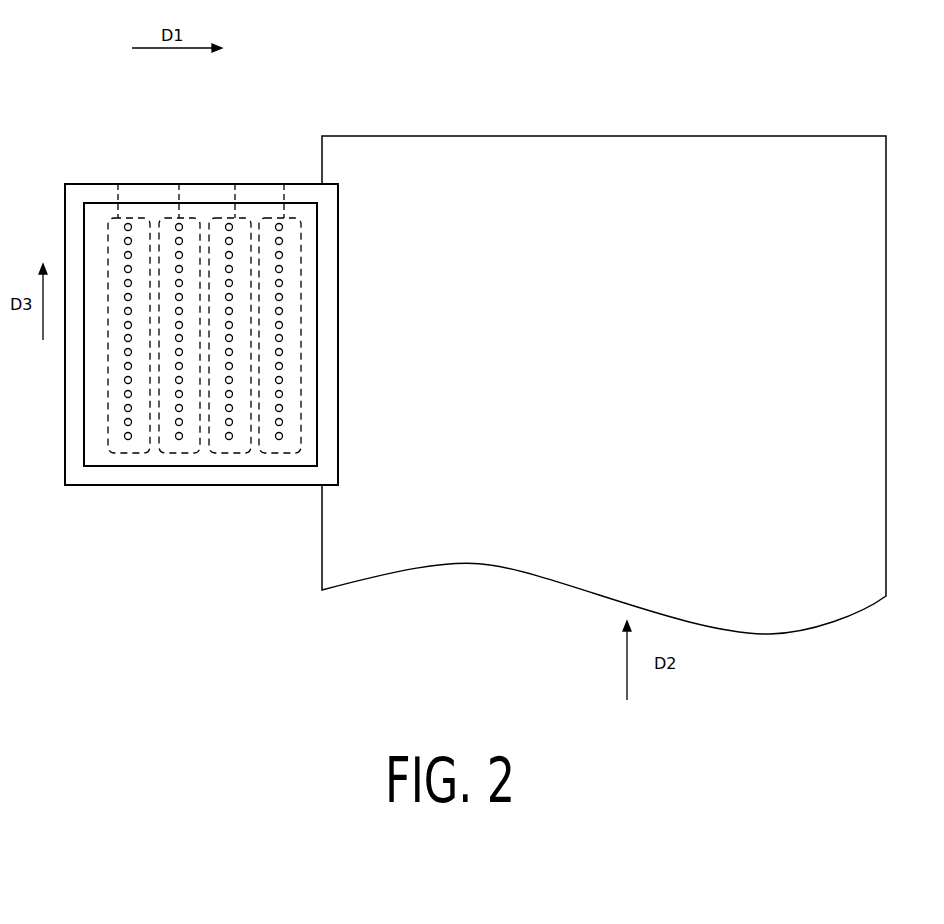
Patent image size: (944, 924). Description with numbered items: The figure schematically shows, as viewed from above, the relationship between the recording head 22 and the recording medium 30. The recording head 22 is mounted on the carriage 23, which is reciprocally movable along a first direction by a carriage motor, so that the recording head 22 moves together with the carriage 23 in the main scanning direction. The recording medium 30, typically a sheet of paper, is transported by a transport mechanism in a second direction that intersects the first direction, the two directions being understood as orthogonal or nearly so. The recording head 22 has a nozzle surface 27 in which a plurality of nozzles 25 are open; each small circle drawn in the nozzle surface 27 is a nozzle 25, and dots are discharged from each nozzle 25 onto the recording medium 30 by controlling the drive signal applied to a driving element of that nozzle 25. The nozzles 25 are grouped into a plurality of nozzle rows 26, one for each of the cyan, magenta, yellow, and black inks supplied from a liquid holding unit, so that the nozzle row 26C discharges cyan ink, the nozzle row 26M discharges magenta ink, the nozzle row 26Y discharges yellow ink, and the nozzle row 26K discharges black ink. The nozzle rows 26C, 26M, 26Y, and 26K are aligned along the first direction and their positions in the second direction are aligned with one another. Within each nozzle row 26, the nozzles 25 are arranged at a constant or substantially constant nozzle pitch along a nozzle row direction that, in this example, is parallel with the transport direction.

The recording head 22 is at (92, 402).
The carriage 23 is at (170, 487).
The nozzle 25 is at (126, 426).
The nozzle row 26 is at (211, 268).
The nozzle row for cyan ink 26C is at (121, 168).
The nozzle row for magenta ink 26M is at (182, 170).
The nozzle row for yellow ink 26Y is at (239, 170).
The nozzle row for black ink 26K is at (289, 170).
The nozzle surface 27 is at (245, 458).
The recording medium 30 is at (570, 143).